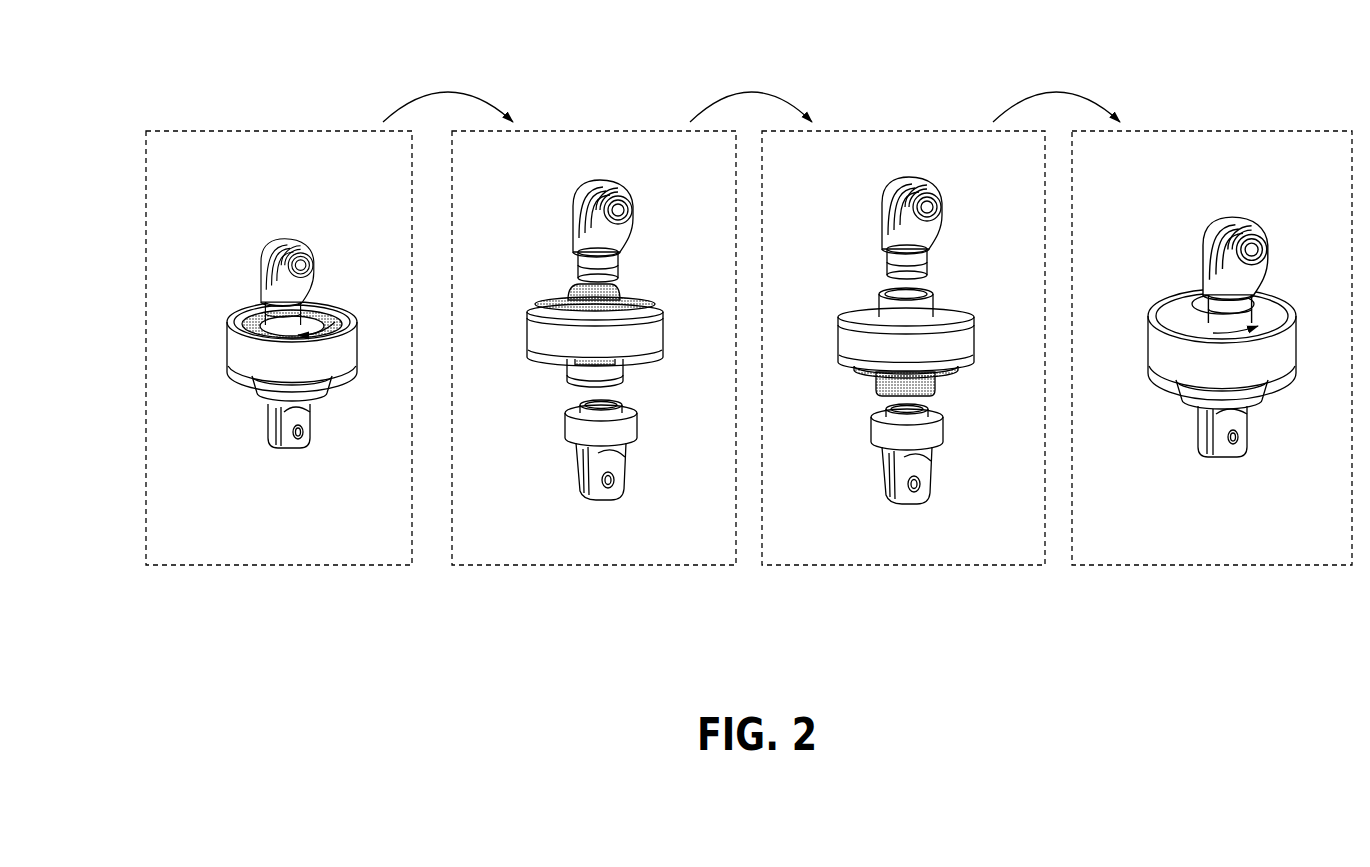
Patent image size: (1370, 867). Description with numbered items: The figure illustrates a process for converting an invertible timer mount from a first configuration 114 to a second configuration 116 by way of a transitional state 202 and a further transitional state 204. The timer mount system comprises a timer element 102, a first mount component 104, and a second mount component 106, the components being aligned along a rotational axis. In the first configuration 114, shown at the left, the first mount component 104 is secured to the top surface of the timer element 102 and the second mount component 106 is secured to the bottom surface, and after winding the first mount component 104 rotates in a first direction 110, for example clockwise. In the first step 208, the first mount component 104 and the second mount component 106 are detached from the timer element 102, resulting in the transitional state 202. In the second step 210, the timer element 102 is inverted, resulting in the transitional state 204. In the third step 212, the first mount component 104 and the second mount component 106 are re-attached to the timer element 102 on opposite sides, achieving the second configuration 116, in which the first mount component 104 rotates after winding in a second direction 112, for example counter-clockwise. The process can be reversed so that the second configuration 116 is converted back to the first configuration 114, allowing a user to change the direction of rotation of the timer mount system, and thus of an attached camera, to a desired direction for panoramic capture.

The timer element 102 is at (232, 350).
The first mount component 104 is at (298, 227).
The second mount component 106 is at (314, 420).
The first direction 110 is at (334, 322).
The second direction 112 is at (1272, 318).
The first configuration 114 is at (310, 594).
The second configuration 116 is at (1254, 594).
The transitional state 202 is at (604, 594).
The transitional state 204 is at (926, 594).
The first step 208 is at (450, 90).
The second step 210 is at (750, 90).
The third step 212 is at (1060, 90).